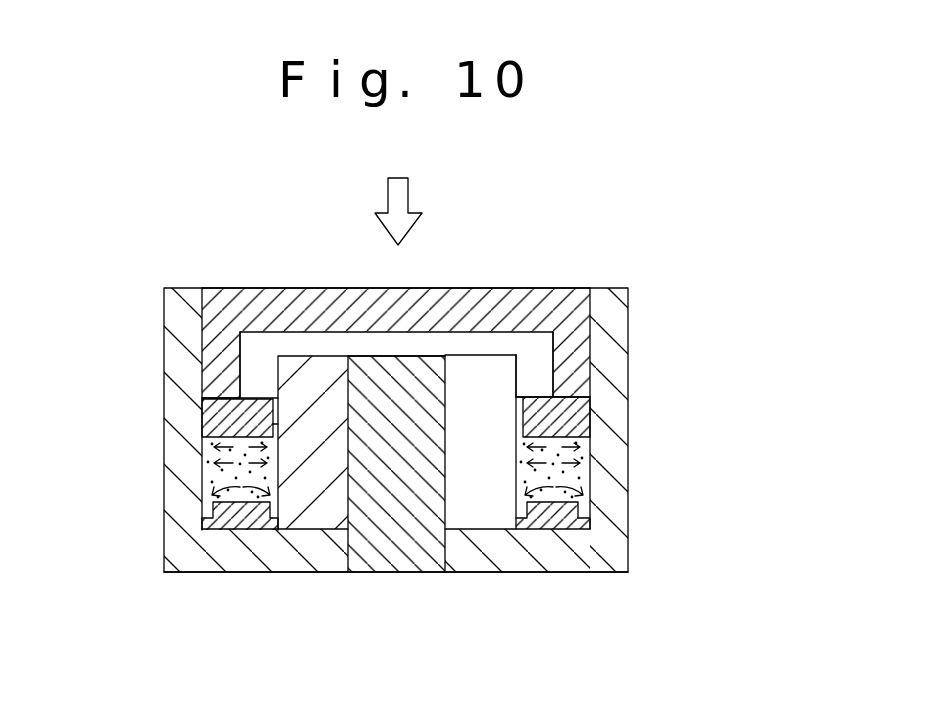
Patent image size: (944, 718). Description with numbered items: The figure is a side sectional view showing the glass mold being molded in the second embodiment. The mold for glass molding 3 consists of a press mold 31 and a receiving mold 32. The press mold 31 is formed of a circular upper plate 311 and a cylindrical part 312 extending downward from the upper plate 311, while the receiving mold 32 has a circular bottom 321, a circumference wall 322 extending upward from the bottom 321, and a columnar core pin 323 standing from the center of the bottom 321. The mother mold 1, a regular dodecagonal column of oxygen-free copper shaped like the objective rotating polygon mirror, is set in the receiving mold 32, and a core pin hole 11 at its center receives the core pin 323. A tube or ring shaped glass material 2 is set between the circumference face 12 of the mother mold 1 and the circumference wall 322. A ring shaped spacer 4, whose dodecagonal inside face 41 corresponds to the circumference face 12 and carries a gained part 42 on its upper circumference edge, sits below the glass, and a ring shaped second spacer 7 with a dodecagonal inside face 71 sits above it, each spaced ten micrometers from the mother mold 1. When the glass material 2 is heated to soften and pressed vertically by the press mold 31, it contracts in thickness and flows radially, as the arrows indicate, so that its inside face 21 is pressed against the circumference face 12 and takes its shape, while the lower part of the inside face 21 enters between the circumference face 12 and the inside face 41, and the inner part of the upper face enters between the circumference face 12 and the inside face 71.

The mother mold 1 is at (485, 345).
The core pin hole 11 is at (420, 390).
The circumference face 12 is at (516, 385).
The glass material 2 is at (590, 457).
The inside face 21 is at (366, 516).
The mold for glass molding 3 is at (662, 293).
The press mold 31 is at (541, 270).
The upper plate 311 is at (257, 288).
The cylindrical part 312 is at (202, 368).
The receiving mold 32 is at (640, 552).
The bottom 321 is at (296, 573).
The circumference wall 322 is at (165, 493).
The core pin 323 is at (365, 356).
The spacer 4 is at (547, 529).
The inside face 41 is at (508, 510).
The gained part 42 is at (590, 507).
The second spacer 7 is at (553, 396).
The inside face 71 is at (518, 356).